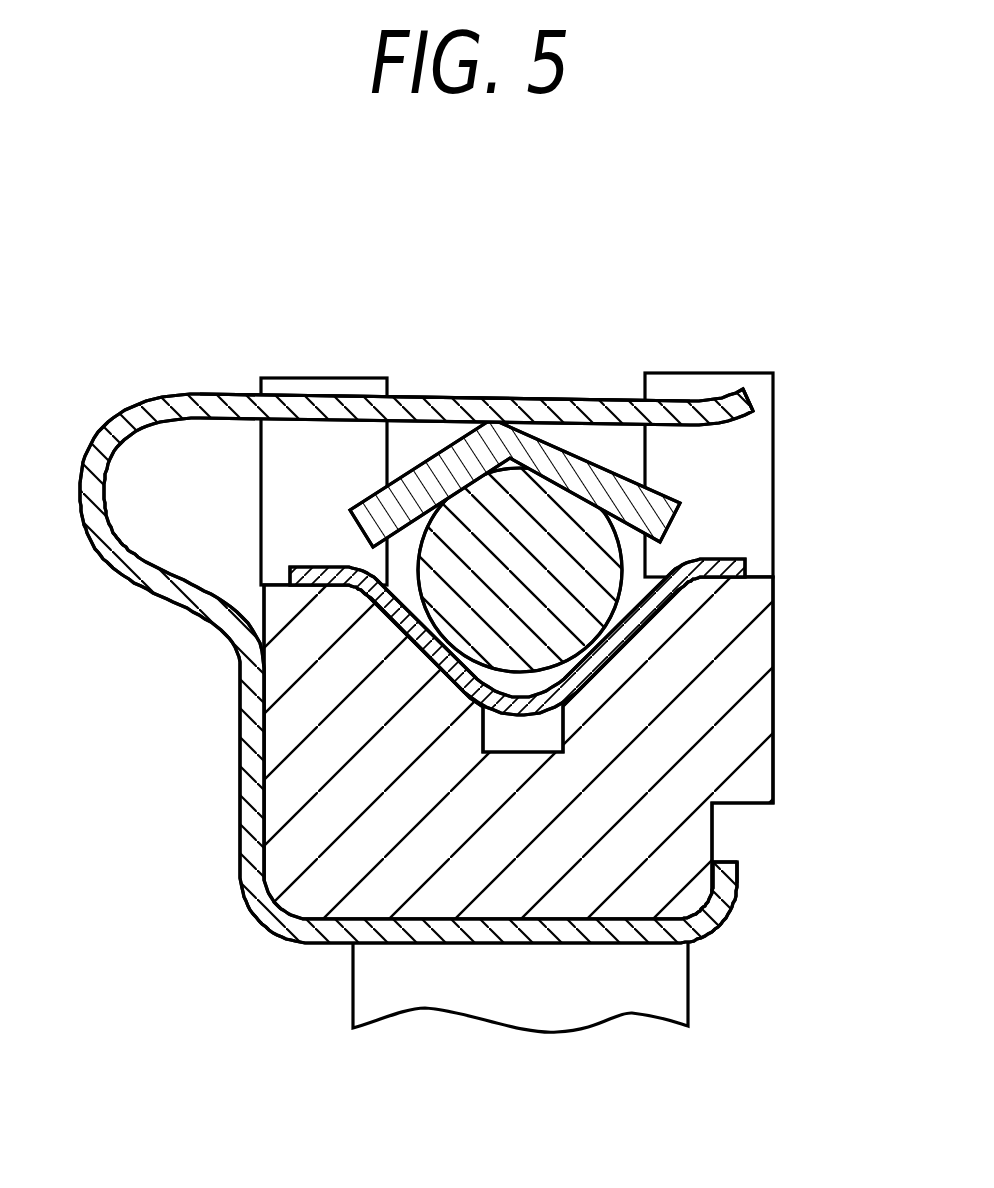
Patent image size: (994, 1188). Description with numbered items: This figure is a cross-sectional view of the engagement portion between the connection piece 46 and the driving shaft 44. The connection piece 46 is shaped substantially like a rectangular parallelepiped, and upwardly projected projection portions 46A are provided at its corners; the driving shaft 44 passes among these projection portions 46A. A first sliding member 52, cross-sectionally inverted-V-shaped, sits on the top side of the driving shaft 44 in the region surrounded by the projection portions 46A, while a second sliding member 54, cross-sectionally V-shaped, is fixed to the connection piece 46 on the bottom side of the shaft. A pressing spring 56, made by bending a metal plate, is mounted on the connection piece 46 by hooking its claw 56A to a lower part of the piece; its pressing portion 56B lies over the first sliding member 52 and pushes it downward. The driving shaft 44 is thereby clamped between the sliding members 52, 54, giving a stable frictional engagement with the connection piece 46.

The driving shaft 44 is at (497, 512).
The connection piece 46 is at (296, 768).
The projection portions 46A is at (323, 377).
The first sliding member 52 is at (598, 440).
The second sliding member 54 is at (715, 560).
The pressing spring 56 is at (152, 365).
The claw 56A is at (735, 864).
The pressing portion 56B is at (528, 407).